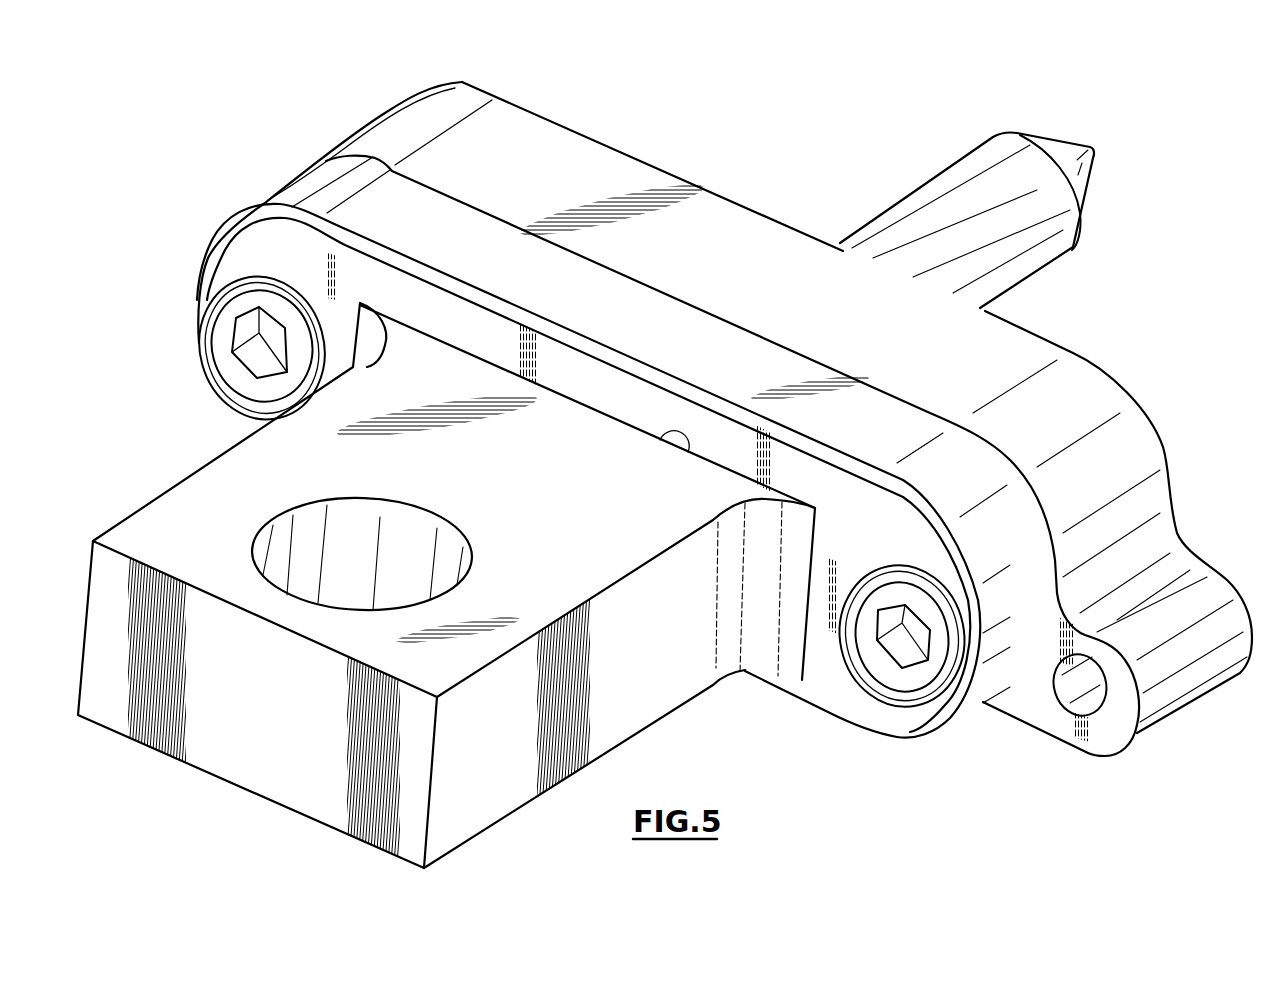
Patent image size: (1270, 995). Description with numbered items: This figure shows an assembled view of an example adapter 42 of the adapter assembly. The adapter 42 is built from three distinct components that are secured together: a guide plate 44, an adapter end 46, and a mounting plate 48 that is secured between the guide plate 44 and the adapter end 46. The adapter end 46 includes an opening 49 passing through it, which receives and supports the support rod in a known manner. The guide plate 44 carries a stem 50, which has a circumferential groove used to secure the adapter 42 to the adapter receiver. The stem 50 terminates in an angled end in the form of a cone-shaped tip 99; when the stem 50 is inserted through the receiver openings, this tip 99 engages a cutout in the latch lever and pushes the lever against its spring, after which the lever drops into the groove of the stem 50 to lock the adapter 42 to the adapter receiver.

The adapter 42 is at (1199, 716).
The guide plate 44 is at (513, 112).
The adapter end 46 is at (262, 798).
The mounting plate 48 is at (940, 735).
The opening 49 is at (258, 547).
The stem 50 is at (947, 178).
The cone-shaped tip 99 is at (1086, 170).